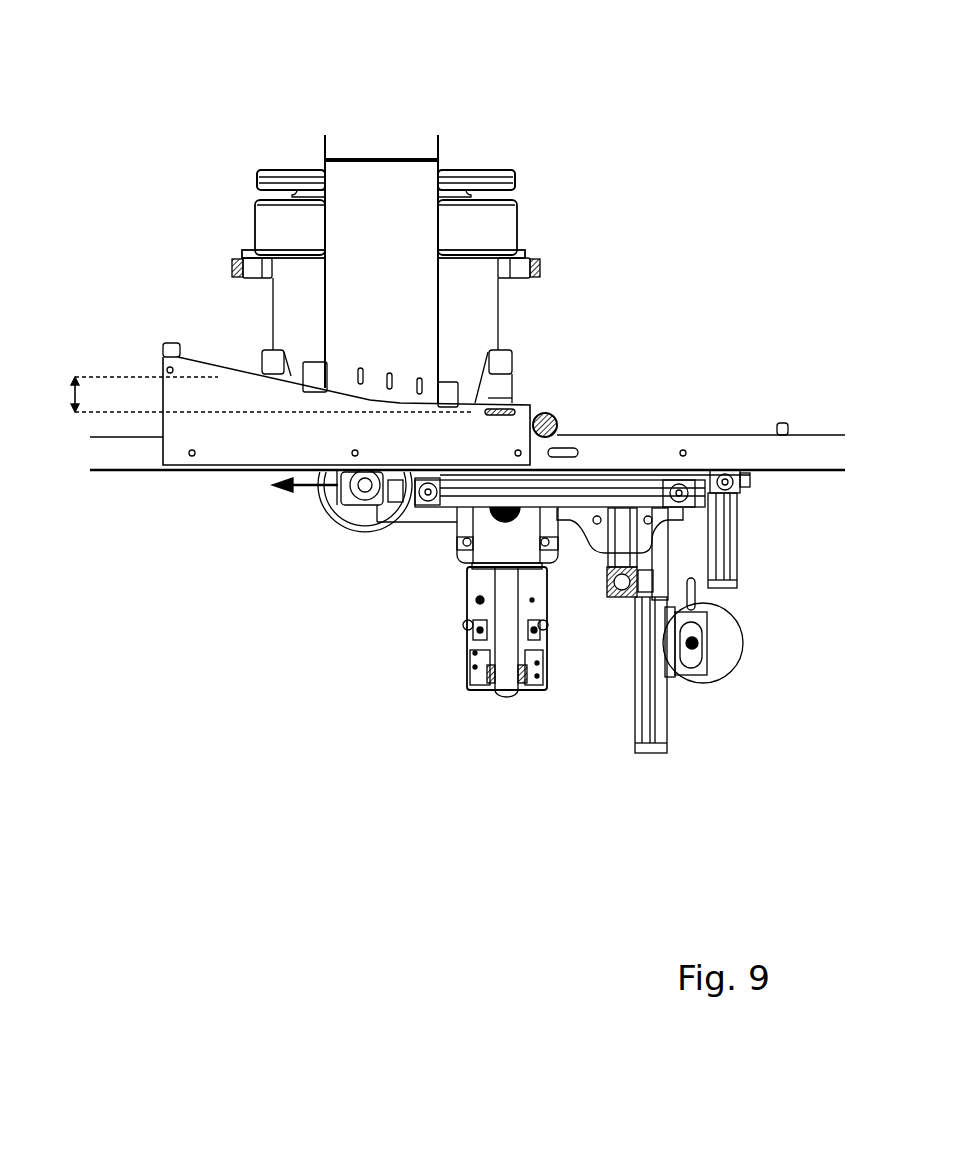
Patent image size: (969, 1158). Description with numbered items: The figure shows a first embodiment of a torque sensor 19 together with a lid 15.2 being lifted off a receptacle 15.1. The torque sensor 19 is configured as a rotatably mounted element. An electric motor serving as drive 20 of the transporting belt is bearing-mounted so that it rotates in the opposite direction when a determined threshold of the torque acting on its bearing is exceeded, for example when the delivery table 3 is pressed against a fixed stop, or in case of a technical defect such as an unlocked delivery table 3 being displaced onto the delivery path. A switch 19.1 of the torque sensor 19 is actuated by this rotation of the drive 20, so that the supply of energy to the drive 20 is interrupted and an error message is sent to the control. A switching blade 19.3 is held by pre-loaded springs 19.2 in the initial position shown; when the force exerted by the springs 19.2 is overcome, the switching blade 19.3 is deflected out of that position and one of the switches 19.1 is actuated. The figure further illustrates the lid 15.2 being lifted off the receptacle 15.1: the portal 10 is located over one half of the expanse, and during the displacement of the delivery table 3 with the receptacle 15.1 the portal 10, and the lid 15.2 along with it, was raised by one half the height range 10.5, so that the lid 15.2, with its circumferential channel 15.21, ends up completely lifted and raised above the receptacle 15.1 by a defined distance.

The delivery table 3 is at (556, 415).
The portal 10 is at (428, 296).
The height range 10.5 is at (75, 378).
The receptacle 15.1 is at (288, 303).
The lid 15.2 is at (298, 172).
The ring lip 15.21 is at (258, 178).
The torque sensor 19 is at (465, 590).
The switch 19.1 is at (475, 672).
The pre-loaded springs 19.2 is at (527, 675).
The switching blade 19.3 is at (508, 610).
The drive 20 is at (487, 538).